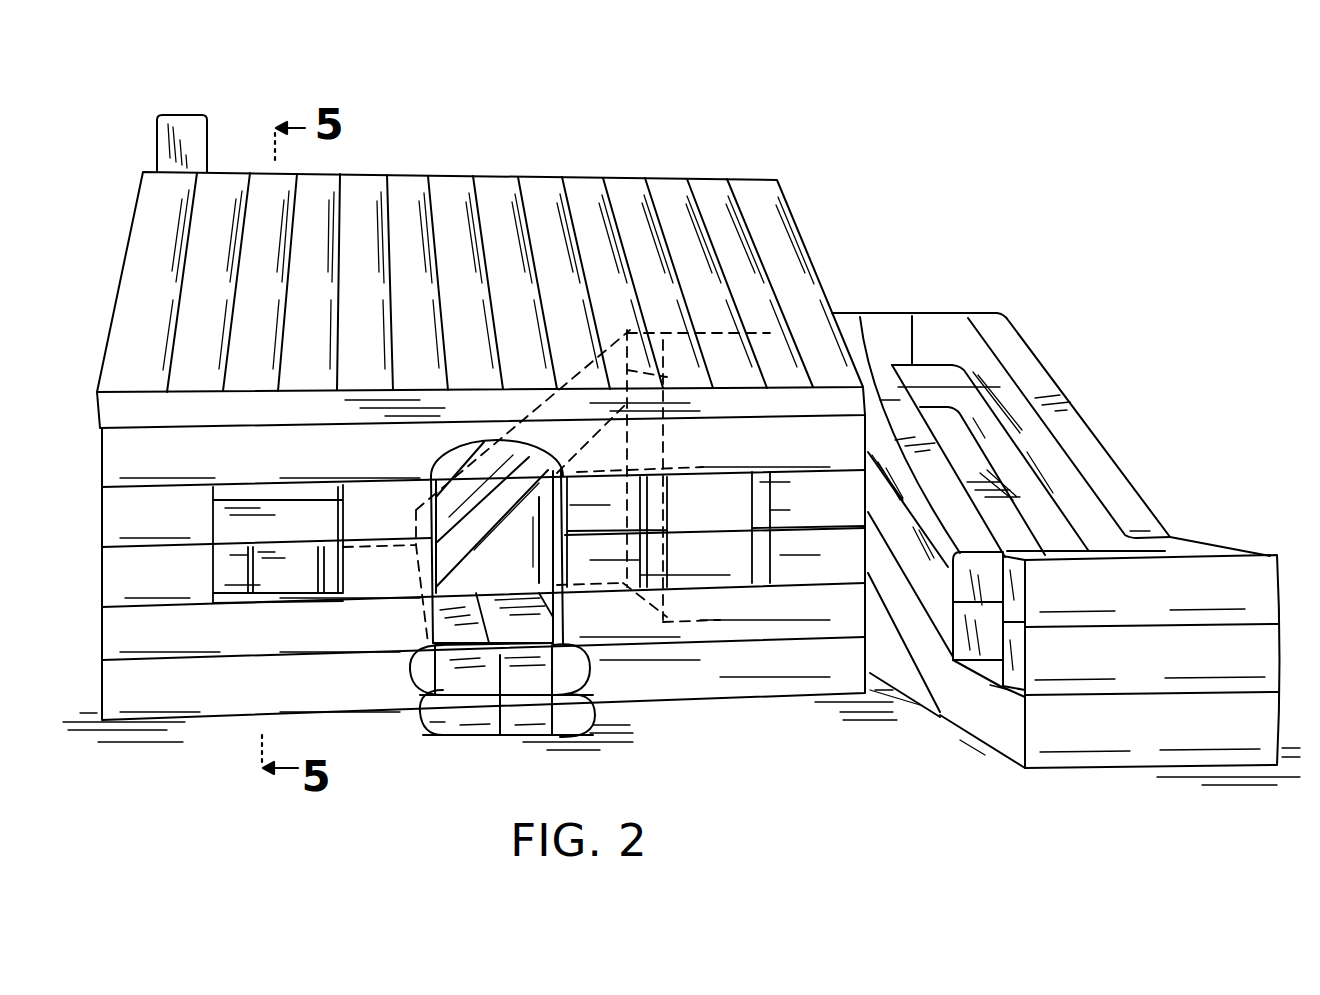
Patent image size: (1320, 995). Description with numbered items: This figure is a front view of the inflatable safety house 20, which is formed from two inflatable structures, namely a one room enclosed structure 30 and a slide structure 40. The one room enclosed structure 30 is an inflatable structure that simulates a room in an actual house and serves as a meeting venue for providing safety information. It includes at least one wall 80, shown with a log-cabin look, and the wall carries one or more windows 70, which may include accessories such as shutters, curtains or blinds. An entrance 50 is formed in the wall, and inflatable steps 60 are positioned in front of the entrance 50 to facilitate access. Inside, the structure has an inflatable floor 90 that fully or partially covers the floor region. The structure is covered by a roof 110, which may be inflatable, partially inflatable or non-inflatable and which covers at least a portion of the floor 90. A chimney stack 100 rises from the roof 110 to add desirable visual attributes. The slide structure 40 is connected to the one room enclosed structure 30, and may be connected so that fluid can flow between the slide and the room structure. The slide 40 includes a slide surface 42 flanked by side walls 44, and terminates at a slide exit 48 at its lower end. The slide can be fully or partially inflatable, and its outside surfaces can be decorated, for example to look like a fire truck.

The inflatable safety house 20 is at (594, 108).
The one room enclosed structure 30 is at (671, 173).
The roof 110 is at (453, 200).
The chimney stack 100 is at (168, 137).
The wall 80 is at (128, 568).
The window 70 is at (227, 568).
The entrance 50 is at (547, 545).
The inflatable floor 90 is at (507, 622).
The inflatable steps 60 is at (478, 715).
The slide structure 40 is at (1036, 335).
The side walls 44 is at (891, 333).
The slide surface 42 is at (1012, 505).
The slide exit 48 is at (983, 643).